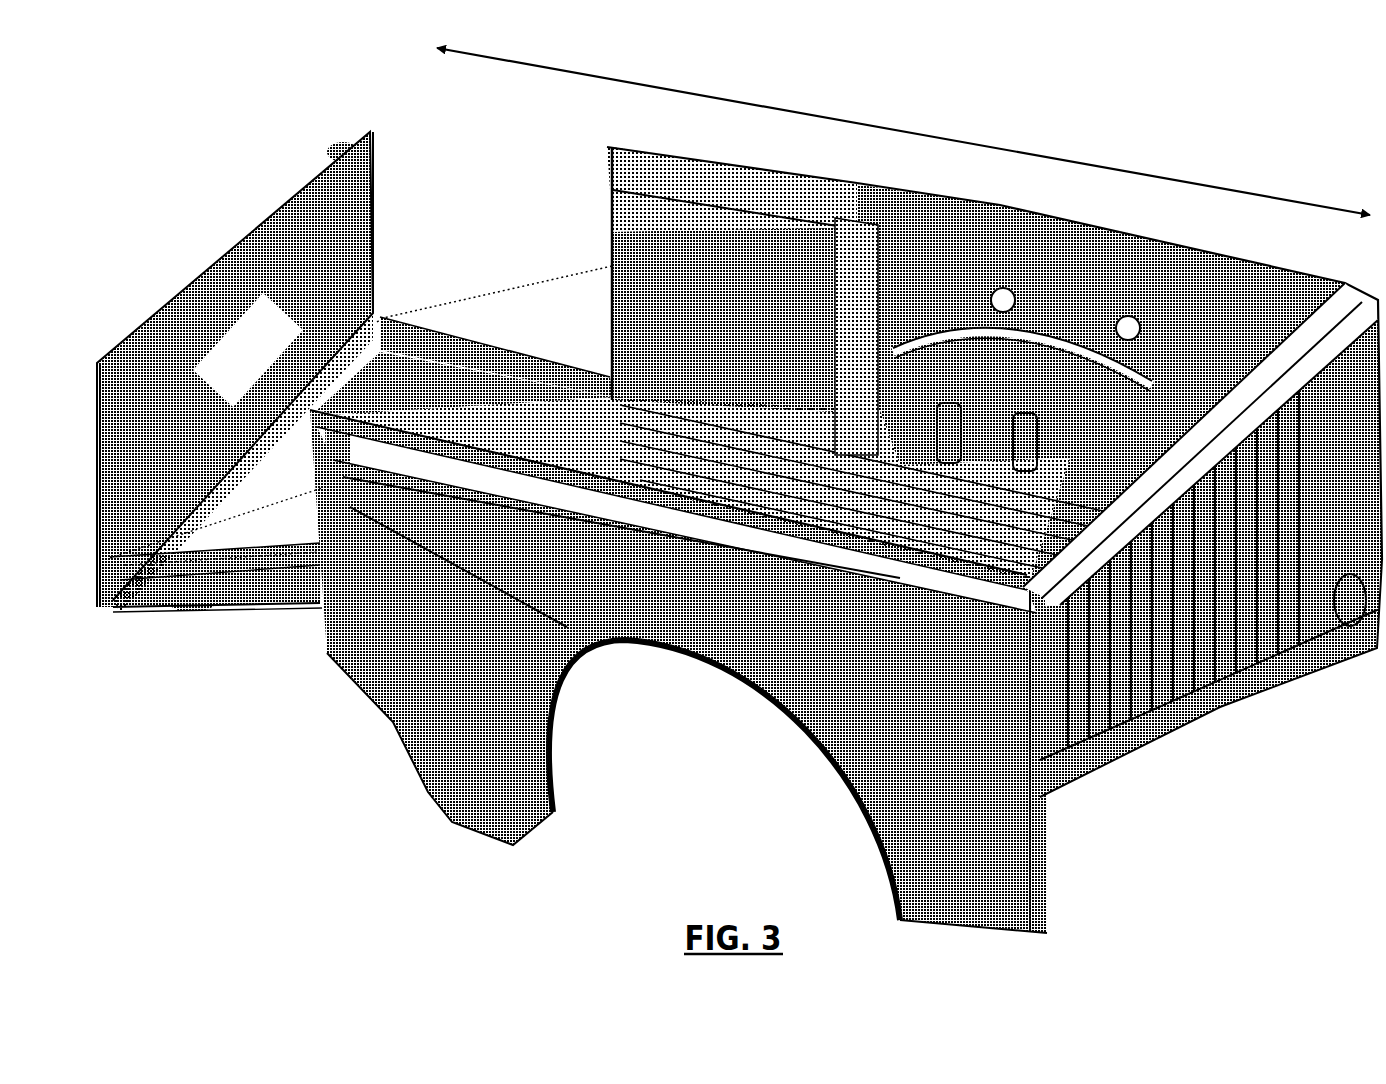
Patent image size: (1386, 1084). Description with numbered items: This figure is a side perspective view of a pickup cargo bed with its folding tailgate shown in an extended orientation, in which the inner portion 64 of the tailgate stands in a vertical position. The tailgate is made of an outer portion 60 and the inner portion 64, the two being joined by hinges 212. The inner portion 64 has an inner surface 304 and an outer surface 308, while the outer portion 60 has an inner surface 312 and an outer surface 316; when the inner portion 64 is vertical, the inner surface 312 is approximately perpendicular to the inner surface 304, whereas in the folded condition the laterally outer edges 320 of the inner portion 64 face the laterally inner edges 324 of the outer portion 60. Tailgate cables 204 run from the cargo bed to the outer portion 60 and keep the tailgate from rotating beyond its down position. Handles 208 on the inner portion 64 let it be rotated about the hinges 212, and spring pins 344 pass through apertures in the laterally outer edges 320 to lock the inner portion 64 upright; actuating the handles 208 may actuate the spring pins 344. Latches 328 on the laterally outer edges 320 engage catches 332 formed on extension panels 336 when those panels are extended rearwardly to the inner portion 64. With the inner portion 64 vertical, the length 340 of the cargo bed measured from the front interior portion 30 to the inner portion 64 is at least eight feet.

The front interior portion 30 is at (1198, 393).
The outer portion 60 is at (242, 610).
The inner portion 64 is at (222, 250).
The tailgate cables 204 is at (563, 300).
The handles 208 is at (335, 152).
The hinges 212 is at (107, 582).
The inner surface 304 is at (225, 310).
The outer surface 308 is at (100, 405).
The inner surface 312 is at (257, 515).
The outer surface 316 is at (197, 633).
The laterally outer edges 320 is at (376, 162).
The laterally inner edges 324 is at (402, 340).
The latches 328 is at (372, 222).
The catches 332 is at (617, 262).
The extension panels 336 is at (603, 450).
The length 340 is at (1178, 178).
The spring pins 344 is at (400, 283).